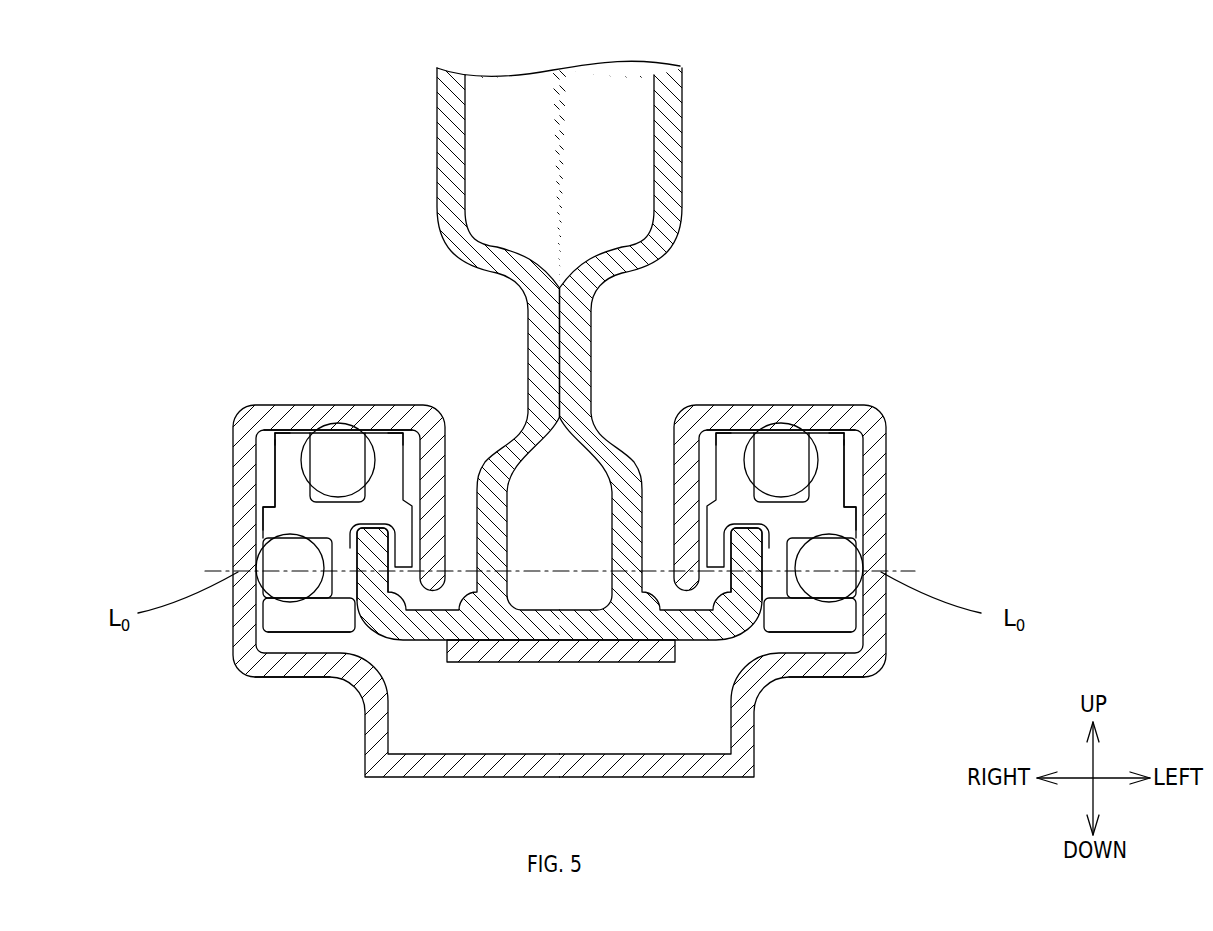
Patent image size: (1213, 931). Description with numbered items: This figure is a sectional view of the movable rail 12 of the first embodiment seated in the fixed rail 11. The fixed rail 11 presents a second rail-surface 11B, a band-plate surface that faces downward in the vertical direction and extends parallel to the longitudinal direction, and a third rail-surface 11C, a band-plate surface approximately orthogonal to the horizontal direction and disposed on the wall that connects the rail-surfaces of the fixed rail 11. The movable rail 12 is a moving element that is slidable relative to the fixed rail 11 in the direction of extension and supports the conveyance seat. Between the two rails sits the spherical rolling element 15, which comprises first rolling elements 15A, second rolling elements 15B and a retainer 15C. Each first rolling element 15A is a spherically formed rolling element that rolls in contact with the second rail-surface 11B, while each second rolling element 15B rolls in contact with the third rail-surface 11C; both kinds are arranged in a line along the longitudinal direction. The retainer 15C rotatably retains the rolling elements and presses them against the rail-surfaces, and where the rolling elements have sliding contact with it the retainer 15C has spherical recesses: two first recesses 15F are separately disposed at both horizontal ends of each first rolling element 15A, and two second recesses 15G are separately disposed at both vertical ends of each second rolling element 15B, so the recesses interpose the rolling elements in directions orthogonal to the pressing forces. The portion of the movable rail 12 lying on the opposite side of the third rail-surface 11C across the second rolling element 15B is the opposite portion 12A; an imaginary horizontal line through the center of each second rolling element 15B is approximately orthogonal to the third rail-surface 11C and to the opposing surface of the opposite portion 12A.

The fixed rail 11 is at (628, 790).
The second rail-surface 11B is at (379, 430).
The third rail-surface 11C is at (250, 650).
The movable rail 12 is at (690, 128).
The opposite portion 12A is at (369, 592).
The spherical rolling element 15 is at (268, 483).
The first rolling element 15A is at (331, 445).
The second rolling element 15B is at (276, 619).
The retainer 15C is at (280, 510).
The first recess 15F is at (272, 438).
The second recess 15G is at (281, 563).